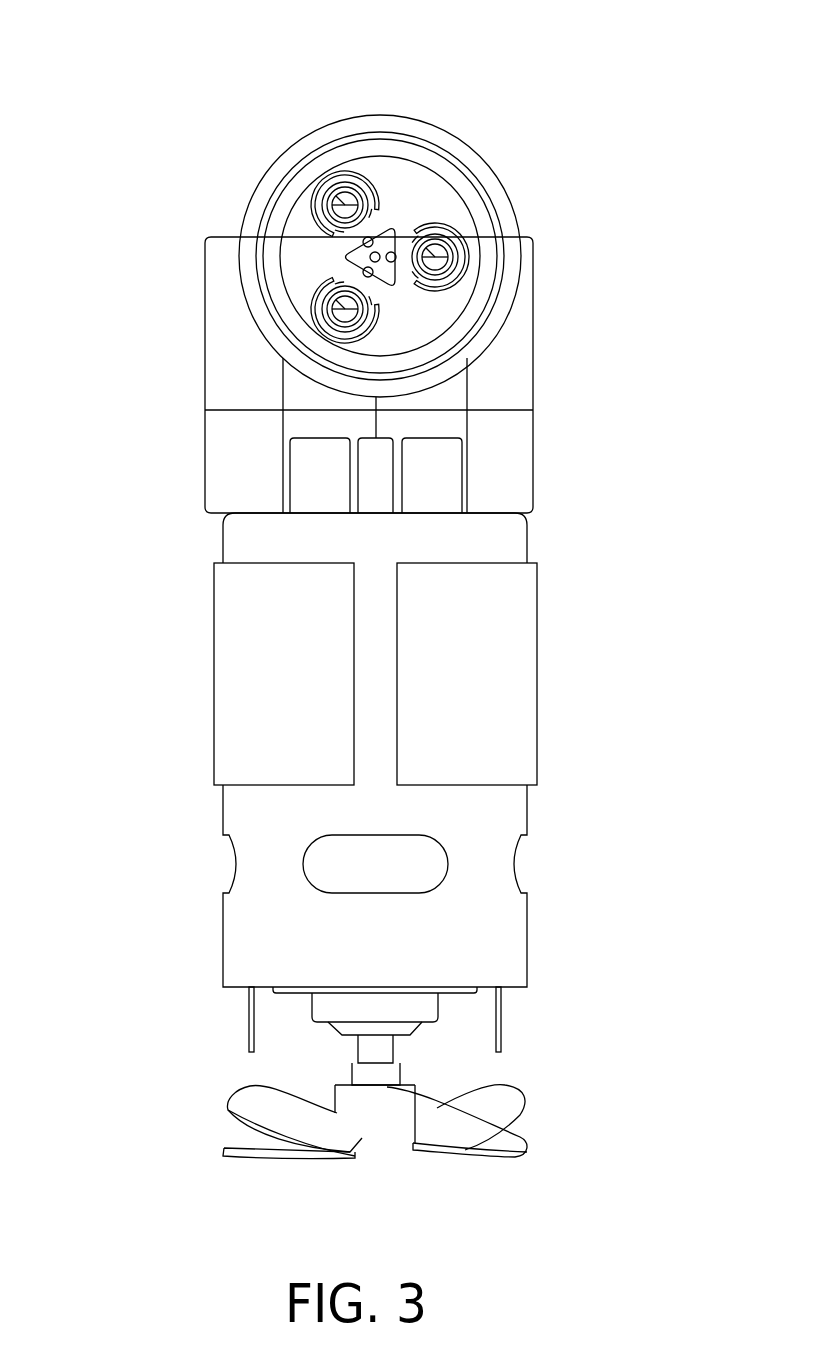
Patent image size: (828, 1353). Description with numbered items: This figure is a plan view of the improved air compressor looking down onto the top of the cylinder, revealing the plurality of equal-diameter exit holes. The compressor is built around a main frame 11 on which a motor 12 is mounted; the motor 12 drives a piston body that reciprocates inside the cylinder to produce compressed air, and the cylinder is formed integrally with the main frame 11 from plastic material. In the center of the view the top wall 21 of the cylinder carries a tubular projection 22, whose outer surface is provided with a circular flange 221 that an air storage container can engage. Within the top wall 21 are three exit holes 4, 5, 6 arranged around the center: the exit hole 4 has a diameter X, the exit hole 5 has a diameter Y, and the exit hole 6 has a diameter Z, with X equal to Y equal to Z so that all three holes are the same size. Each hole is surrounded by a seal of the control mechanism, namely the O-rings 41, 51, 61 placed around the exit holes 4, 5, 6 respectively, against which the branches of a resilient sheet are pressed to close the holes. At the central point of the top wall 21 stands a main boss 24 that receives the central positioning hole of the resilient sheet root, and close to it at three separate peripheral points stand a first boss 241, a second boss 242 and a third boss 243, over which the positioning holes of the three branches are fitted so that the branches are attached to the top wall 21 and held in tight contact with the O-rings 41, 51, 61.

The exit hole 4 is at (307, 139).
The O-ring 41 is at (374, 180).
The first boss 241 is at (394, 238).
The main boss 24 is at (505, 217).
The circular flange 221 is at (485, 186).
The tubular projection 22 is at (305, 206).
The diameter of exit hole 4 X is at (286, 210).
The top wall 21 is at (308, 258).
The diameter of exit hole 5 Y is at (342, 257).
The O-ring 61 is at (452, 240).
The diameter of exit hole 6 Z is at (450, 257).
The exit hole 6 is at (527, 250).
The O-ring 51 is at (330, 308).
The exit hole 5 is at (241, 305).
The third boss 243 is at (405, 316).
The second boss 242 is at (400, 333).
The main frame 11 is at (253, 463).
The motor 12 is at (245, 827).